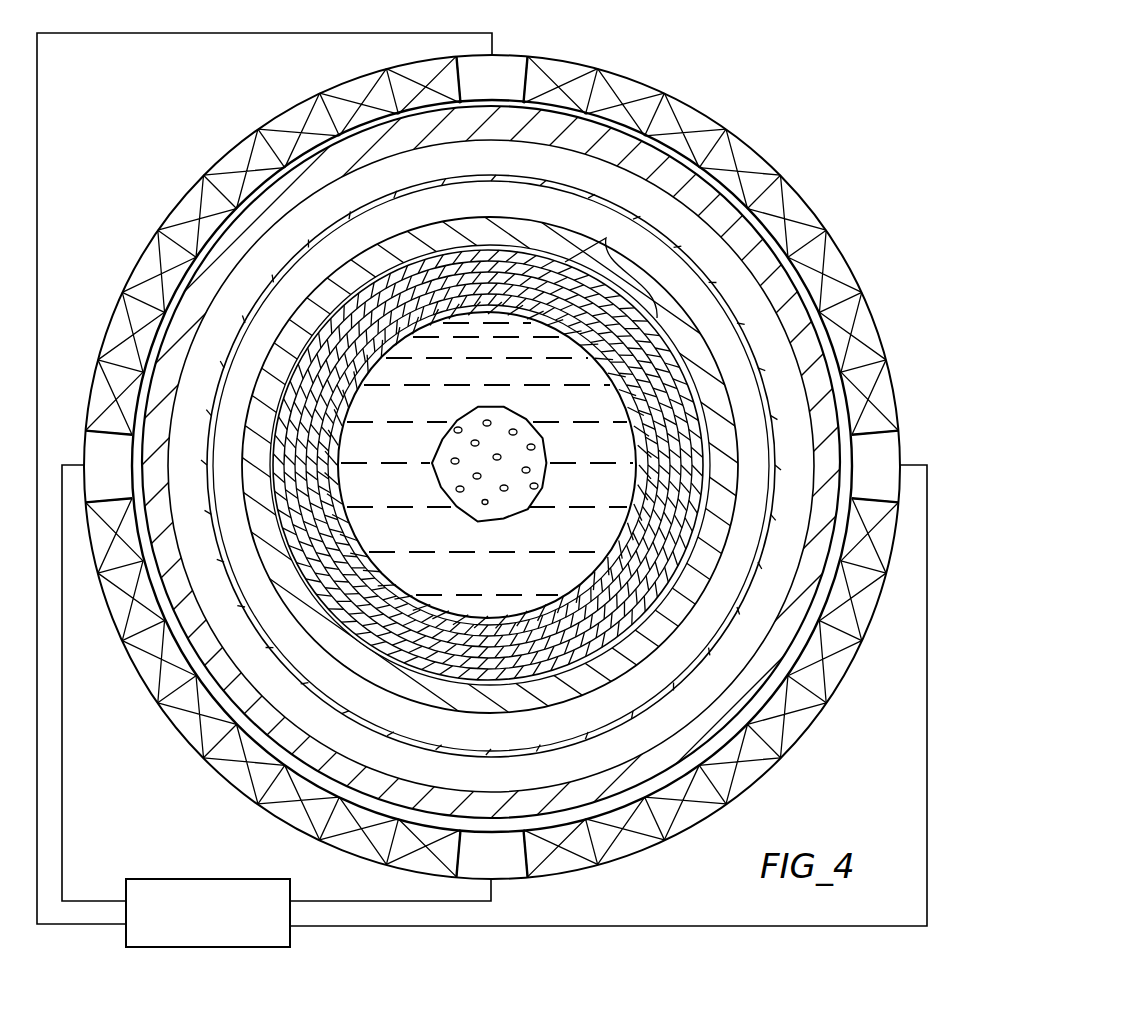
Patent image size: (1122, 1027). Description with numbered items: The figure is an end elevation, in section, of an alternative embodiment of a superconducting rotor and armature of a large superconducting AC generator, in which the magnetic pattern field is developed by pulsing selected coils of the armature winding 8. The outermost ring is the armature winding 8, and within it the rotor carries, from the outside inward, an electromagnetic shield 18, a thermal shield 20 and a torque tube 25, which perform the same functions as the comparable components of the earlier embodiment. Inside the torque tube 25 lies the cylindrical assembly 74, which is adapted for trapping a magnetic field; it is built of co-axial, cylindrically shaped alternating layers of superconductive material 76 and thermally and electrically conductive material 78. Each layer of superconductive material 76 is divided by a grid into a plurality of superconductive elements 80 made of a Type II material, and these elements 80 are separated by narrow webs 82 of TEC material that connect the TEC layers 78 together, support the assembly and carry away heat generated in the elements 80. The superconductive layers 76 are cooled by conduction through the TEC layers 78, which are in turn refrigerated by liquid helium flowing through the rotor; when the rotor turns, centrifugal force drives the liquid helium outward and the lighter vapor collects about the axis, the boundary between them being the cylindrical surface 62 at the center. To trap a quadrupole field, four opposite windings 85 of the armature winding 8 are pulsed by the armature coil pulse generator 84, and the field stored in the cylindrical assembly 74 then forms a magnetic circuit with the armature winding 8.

The armature winding 8 is at (766, 157).
The electromagnetic shield 18 is at (742, 687).
The thermal shield 20 is at (690, 670).
The torque tube 25 is at (358, 657).
The cylindrical surface between liquid helium and vapor 62 is at (530, 500).
The cylindrical assembly 74 is at (599, 590).
The layer of superconductive material 76 is at (730, 516).
The thermally and electrically conductive (TEC) material layer 78 is at (642, 493).
The superconductive elements 80 is at (680, 412).
The webs of TEC material 82 is at (611, 269).
The armature coil pulse generator 84 is at (176, 878).
The opposite windings 85 is at (510, 880).